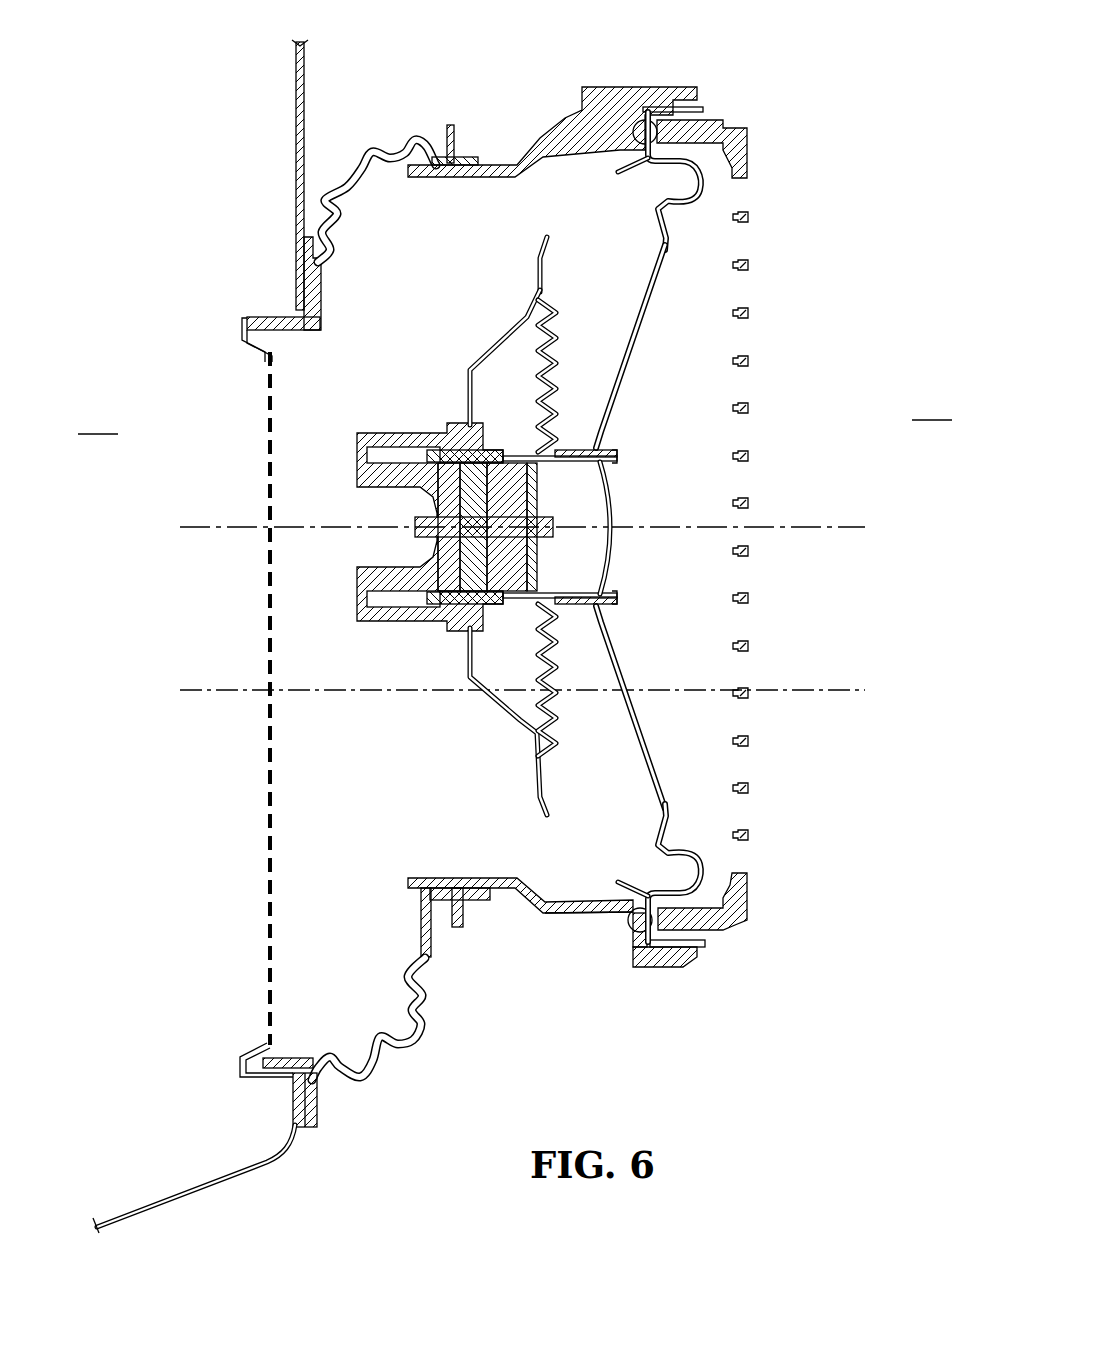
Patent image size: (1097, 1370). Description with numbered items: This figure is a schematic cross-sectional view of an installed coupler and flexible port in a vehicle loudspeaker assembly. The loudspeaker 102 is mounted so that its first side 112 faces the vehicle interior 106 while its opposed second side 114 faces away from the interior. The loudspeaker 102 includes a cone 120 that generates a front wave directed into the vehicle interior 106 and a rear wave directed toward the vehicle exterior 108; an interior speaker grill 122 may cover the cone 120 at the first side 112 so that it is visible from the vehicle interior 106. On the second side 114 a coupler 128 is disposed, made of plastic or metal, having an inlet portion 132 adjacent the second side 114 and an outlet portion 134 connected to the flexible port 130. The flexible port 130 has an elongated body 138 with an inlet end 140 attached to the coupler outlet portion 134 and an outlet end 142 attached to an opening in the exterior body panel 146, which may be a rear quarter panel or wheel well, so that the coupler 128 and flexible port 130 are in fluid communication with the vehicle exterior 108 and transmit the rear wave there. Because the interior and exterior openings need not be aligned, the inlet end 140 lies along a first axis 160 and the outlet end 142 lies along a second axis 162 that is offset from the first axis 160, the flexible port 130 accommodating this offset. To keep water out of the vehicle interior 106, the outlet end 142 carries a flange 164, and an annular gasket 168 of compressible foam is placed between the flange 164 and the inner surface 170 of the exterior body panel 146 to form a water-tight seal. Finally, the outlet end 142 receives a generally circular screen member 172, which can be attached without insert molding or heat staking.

The loudspeaker 102 is at (622, 563).
The vehicle interior 106 is at (933, 408).
The vehicle exterior 108 is at (99, 422).
The first side 112 is at (715, 198).
The second side 114 is at (410, 398).
The cone 120 is at (633, 354).
The interior speaker grill 122 is at (746, 902).
The coupler 128 is at (573, 922).
The flexible port 130 is at (426, 1044).
The inlet portion 132 is at (640, 87).
The outlet portion 134 is at (428, 877).
The elongated body 138 is at (362, 148).
The inlet end 140 is at (472, 900).
The outlet end 142 is at (273, 1045).
The exterior body panel 146 is at (292, 183).
The first axis 160 is at (838, 527).
The second axis 162 is at (219, 690).
The flange 164 is at (318, 1113).
The annular gasket 168 is at (298, 1122).
The inner surface 170 is at (303, 113).
The screen member 172 is at (262, 640).